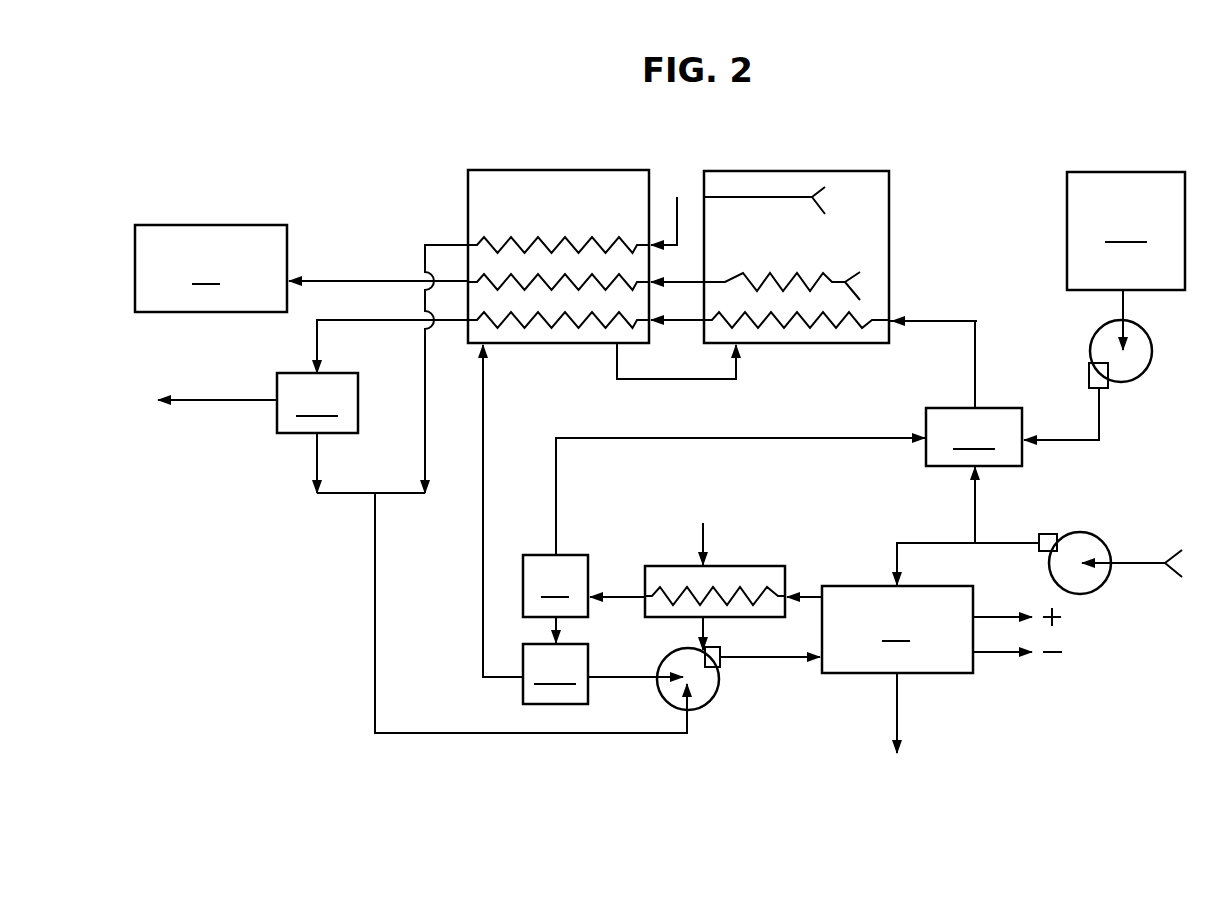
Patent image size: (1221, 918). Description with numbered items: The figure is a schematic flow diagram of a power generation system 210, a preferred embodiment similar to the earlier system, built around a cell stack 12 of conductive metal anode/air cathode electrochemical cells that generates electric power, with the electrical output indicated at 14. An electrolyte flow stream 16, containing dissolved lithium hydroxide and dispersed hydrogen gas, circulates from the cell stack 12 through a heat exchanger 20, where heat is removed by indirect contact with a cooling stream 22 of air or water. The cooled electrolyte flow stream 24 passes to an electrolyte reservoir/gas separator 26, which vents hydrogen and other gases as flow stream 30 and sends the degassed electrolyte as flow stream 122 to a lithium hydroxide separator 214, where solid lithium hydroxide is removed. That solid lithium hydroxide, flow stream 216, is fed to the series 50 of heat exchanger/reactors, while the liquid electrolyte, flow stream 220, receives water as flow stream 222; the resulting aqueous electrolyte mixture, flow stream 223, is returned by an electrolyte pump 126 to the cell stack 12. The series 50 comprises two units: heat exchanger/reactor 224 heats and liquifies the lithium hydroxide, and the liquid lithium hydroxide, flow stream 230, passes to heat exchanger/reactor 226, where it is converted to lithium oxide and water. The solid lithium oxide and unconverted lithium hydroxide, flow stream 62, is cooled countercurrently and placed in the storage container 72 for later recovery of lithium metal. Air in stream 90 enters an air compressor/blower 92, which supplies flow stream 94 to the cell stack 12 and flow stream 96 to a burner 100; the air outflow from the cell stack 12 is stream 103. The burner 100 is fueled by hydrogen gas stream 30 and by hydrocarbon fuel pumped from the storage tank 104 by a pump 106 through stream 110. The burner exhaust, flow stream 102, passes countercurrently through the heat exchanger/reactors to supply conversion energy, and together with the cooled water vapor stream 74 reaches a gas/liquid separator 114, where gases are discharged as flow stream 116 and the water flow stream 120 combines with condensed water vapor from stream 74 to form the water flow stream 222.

The system 210 is at (970, 137).
The series of heat exchanger/reactors 50 is at (690, 158).
The heat exchanger/reactor 224 is at (513, 170).
The heat exchanger/reactor 226 is at (792, 171).
The water vapor flow stream 74 is at (686, 197).
The lithium oxide/lithium hydroxide flow stream 62 is at (343, 280).
The lithium oxide/lithium hydroxide storage container 72 is at (211, 268).
The burner exhaust flow stream 102 is at (355, 320).
The gas/liquid separator 114 is at (317, 403).
The gas flow stream 116 is at (210, 400).
The water flow stream 120 is at (317, 452).
The water flow stream 222 is at (427, 735).
The solid lithium hydroxide flow stream 216 is at (483, 432).
The liquid lithium hydroxide flow stream 230 is at (688, 380).
The hydrogen gas flow stream 30 is at (557, 487).
The electrolyte reservoir/gas separator 26 is at (555, 586).
The cooled electrolyte flow stream 24 is at (608, 597).
The electrolyte flow stream 122 is at (558, 625).
The lithium hydroxide separator 214 is at (555, 674).
The liquid electrolyte flow stream 220 is at (637, 677).
The electrolyte pump 126 is at (702, 695).
The heat exchanger 20 is at (743, 573).
The cooling stream 22 is at (705, 558).
The electrolyte flow stream 16 is at (806, 596).
The aqueous electrolyte mixture flow stream 223 is at (785, 660).
The cell stack 12 is at (897, 629).
The electrical output 14 is at (1017, 630).
The air outflow stream 103 is at (897, 713).
The air flow stream 94 is at (905, 542).
The air flow stream 96 is at (972, 507).
The burner 100 is at (974, 437).
The storage tank 104 is at (1126, 231).
The fuel stream 110 is at (1124, 313).
The pump 106 is at (1133, 368).
The air compressor/blower 92 is at (1082, 541).
The air stream 90 is at (1005, 543).